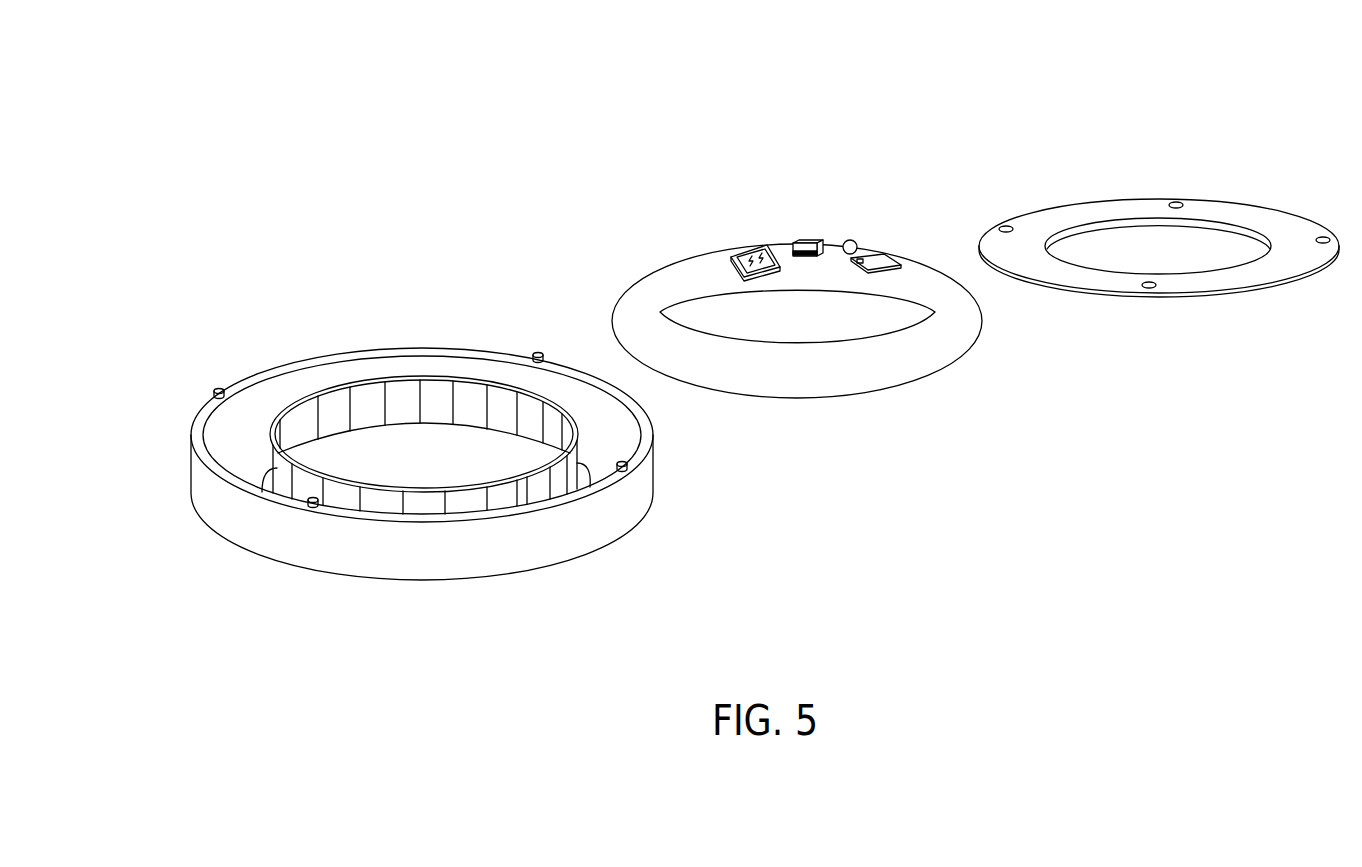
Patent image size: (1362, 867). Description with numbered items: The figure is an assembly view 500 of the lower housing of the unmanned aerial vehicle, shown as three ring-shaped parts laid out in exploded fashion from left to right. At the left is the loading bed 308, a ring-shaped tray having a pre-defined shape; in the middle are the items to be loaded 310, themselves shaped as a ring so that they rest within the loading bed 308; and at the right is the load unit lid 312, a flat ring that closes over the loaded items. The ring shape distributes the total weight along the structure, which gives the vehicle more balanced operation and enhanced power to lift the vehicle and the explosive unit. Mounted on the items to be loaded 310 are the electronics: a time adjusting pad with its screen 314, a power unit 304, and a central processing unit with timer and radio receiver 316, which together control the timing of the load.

The assembly view 500 is at (241, 96).
The loading bed 308 is at (320, 372).
The items to be loaded 310 is at (658, 287).
The load unit lid 312 is at (1100, 210).
The time adjusting pad with its screen 314 is at (748, 258).
The power unit 304 is at (810, 244).
The central processing unit with timer and radio receiver 316 is at (880, 262).